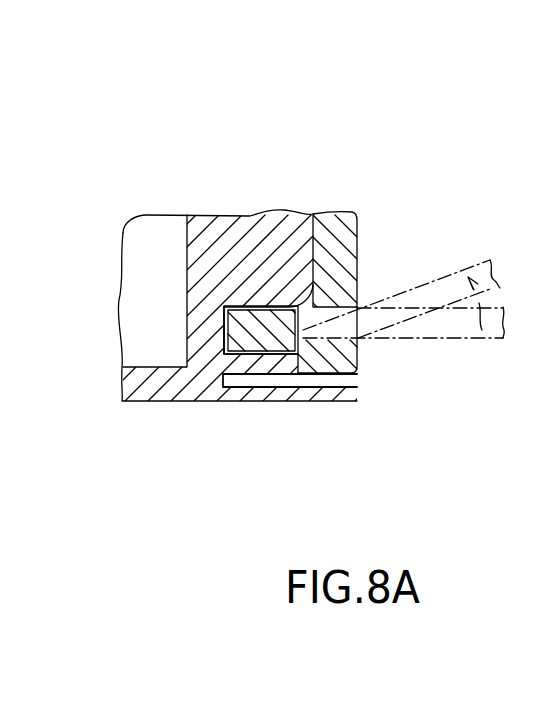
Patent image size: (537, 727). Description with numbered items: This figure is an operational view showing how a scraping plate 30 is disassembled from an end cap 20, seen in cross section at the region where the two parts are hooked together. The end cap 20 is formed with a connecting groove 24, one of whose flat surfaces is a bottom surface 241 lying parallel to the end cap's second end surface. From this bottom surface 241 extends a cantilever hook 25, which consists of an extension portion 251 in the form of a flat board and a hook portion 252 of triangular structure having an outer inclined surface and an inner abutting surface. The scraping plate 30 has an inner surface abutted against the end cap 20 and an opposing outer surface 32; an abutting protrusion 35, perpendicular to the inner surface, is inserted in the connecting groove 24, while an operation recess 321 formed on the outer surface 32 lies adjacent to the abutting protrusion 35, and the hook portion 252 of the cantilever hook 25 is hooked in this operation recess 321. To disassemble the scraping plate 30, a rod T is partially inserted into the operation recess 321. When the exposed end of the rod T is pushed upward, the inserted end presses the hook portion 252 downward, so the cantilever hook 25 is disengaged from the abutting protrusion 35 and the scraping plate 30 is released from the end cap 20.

The end cap 20 is at (206, 205).
The scraping plate 30 is at (340, 205).
The outer surface 32 is at (358, 248).
The operation recess 321 is at (340, 355).
The connecting groove 24 is at (225, 308).
The bottom surface 241 is at (224, 334).
The abutting protrusion 35 is at (232, 348).
The cantilever hook 25 is at (290, 434).
The extension portion 251 is at (258, 366).
The hook portion 252 is at (304, 362).
The rod T is at (431, 289).